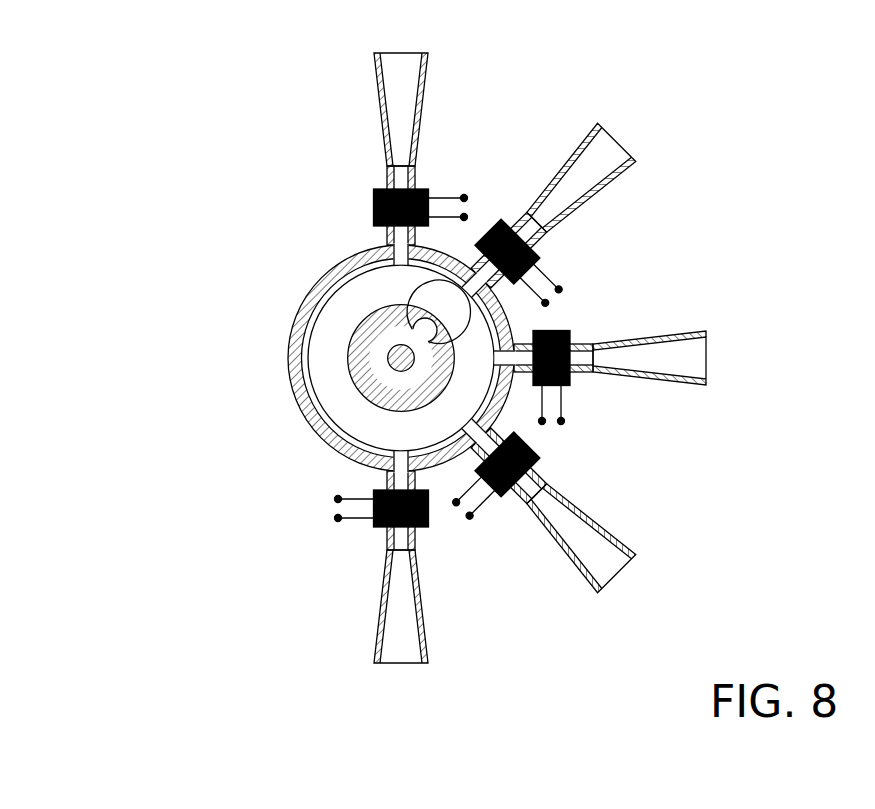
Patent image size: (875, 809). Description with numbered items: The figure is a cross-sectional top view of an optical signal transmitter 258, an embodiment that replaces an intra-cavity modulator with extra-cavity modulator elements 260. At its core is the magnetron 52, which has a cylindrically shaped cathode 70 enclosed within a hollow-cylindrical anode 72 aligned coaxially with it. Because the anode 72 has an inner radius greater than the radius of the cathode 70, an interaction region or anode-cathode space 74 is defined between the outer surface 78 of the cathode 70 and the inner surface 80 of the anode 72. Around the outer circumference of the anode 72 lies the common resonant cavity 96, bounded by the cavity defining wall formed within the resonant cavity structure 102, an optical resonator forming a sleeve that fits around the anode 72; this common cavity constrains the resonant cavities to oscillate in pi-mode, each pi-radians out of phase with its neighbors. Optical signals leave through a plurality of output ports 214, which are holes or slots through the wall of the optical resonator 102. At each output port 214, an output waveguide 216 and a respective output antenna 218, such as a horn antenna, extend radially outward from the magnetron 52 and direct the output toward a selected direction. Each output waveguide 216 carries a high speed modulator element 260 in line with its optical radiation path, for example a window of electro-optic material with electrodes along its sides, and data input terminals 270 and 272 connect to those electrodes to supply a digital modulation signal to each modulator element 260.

The optical signal transmitter 258 is at (396, 364).
The magnetron 52 is at (353, 347).
The resonant cavity structure 102 is at (304, 300).
The common resonant cavity 96 is at (325, 342).
The anode-cathode space 74 is at (359, 373).
The anode 72 is at (362, 373).
The cathode 70 is at (370, 373).
The inner surface 80 is at (418, 322).
The outer surface 78 is at (410, 367).
The output ports 214 is at (383, 247).
The output waveguides 216 is at (388, 185).
The output antennas 218 is at (383, 118).
The modulator elements 260 is at (373, 193).
The data input terminal 270 is at (446, 197).
The data input terminal 272 is at (452, 216).